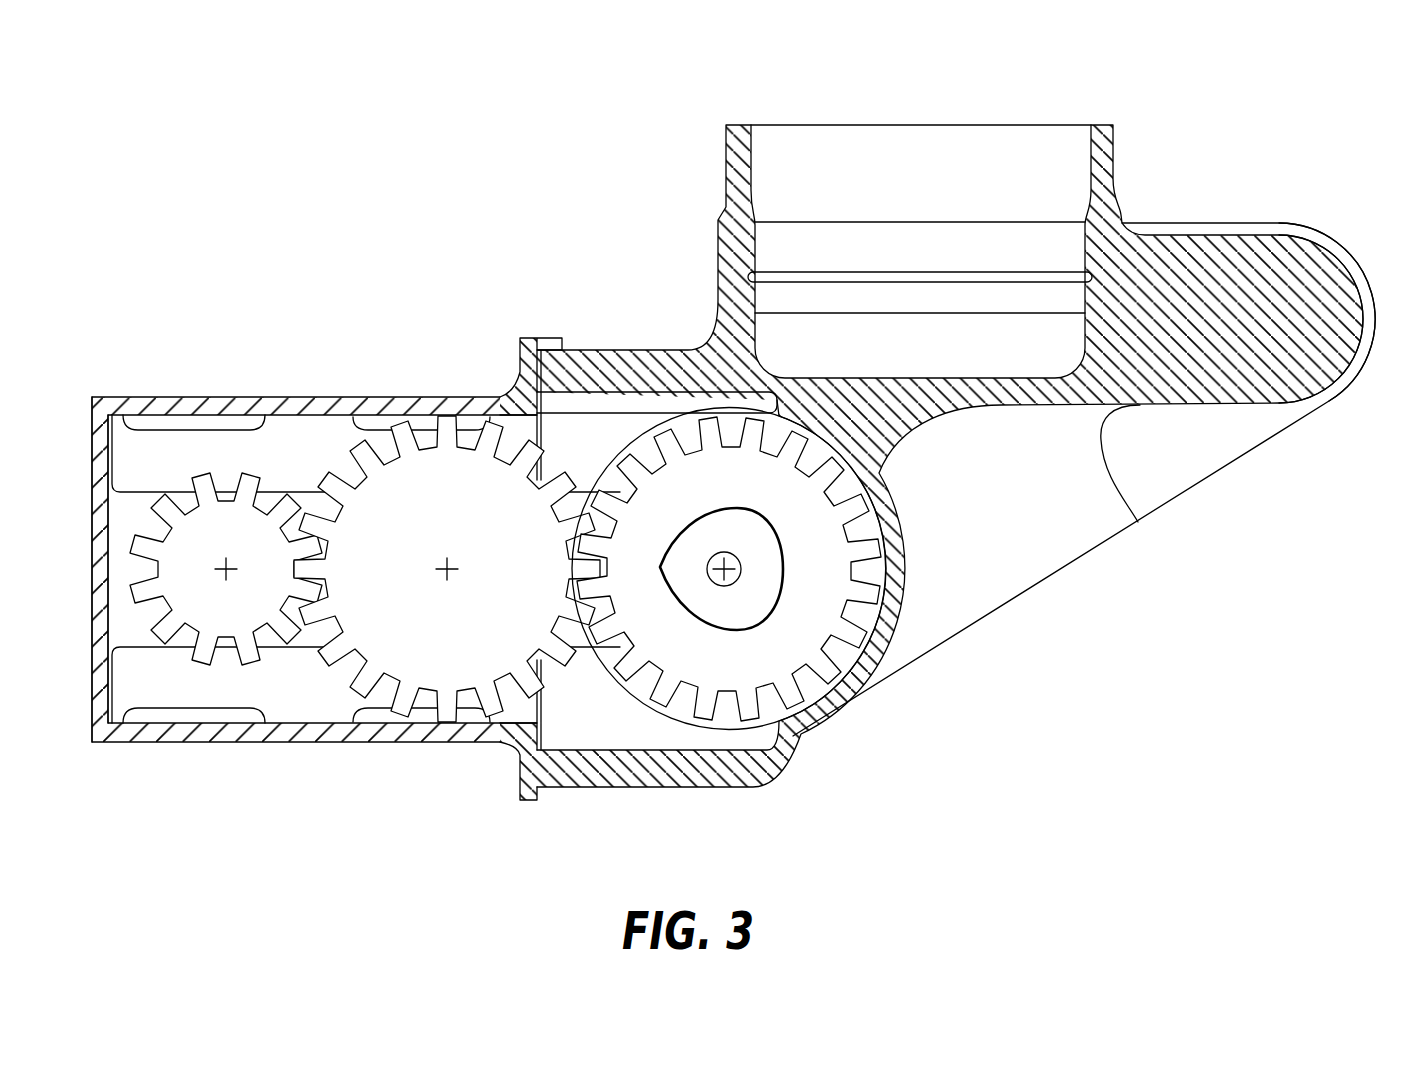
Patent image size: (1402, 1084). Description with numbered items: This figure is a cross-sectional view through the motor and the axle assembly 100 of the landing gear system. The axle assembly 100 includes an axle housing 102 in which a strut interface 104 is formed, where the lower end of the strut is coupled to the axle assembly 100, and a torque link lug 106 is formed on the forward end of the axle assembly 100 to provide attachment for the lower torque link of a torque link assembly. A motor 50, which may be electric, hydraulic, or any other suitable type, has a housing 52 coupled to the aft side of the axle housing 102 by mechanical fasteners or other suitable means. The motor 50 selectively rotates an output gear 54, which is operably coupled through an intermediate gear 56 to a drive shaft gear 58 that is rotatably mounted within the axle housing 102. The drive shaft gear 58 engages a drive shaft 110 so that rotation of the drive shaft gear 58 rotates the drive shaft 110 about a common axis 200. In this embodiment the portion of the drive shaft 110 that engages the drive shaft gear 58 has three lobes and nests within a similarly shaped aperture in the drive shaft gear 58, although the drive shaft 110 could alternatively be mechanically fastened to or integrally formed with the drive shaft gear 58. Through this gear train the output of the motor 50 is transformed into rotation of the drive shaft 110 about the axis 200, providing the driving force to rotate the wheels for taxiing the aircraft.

The axle assembly 100 is at (461, 196).
The axle housing 102 is at (722, 300).
The strut interface 104 is at (910, 126).
The torque link lug 106 is at (1300, 222).
The motor 50 is at (319, 517).
The housing 52 is at (92, 496).
The output gear 54 is at (203, 660).
The intermediate gear 56 is at (333, 660).
The drive shaft gear 58 is at (760, 626).
The drive shaft 110 is at (783, 587).
The common axis 200 is at (724, 569).